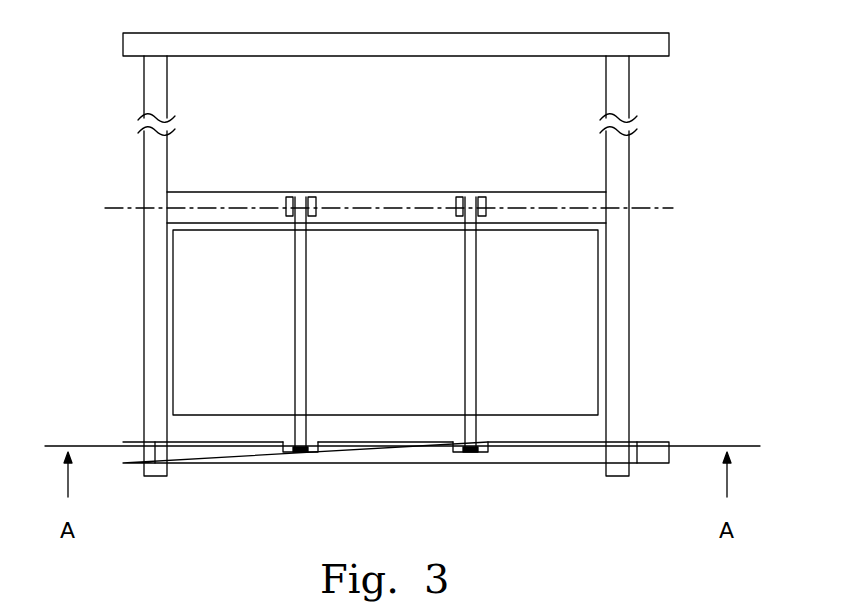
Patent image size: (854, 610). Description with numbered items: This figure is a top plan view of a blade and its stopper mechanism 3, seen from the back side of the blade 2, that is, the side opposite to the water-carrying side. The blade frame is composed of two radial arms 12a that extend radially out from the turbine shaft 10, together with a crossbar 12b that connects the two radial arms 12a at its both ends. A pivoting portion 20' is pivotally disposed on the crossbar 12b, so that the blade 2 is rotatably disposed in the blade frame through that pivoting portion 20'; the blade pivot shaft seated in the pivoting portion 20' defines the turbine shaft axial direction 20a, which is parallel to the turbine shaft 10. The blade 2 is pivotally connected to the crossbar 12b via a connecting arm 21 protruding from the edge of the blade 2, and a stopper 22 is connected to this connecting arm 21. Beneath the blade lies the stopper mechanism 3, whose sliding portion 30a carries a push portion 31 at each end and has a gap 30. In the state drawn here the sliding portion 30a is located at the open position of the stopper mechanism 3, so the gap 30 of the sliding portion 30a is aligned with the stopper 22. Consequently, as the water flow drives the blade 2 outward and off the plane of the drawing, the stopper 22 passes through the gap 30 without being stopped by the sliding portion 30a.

The turbine shaft 10 is at (345, 47).
The radial arms 12a is at (151, 88).
The crossbar 12b is at (374, 196).
The pivoting portion 20' is at (410, 165).
The turbine shaft axial direction 20a is at (440, 207).
The blade 2 is at (392, 330).
The connecting arm 21 is at (303, 335).
The stopper 22 is at (300, 432).
The stopper mechanism 3 is at (393, 491).
The gap 30 is at (293, 455).
The sliding portion 30a is at (388, 465).
The push portion 31 is at (133, 455).